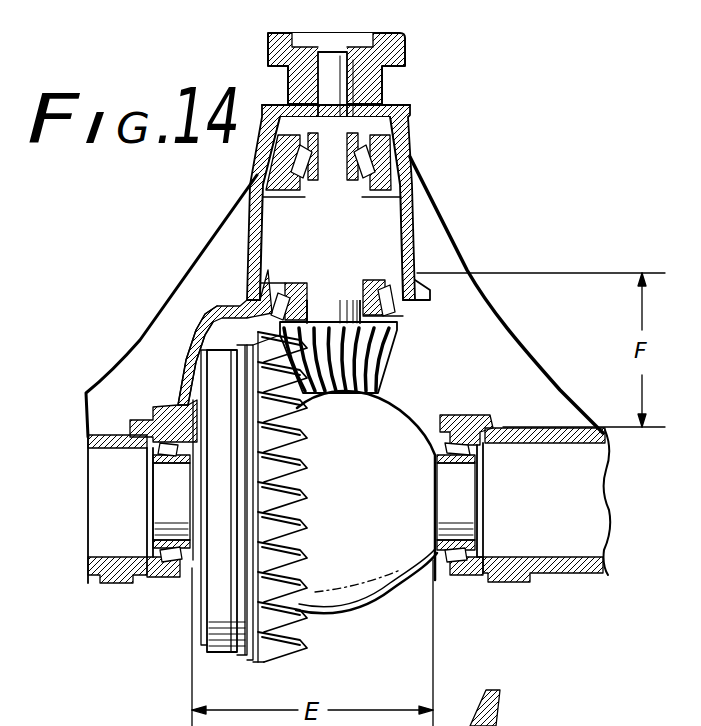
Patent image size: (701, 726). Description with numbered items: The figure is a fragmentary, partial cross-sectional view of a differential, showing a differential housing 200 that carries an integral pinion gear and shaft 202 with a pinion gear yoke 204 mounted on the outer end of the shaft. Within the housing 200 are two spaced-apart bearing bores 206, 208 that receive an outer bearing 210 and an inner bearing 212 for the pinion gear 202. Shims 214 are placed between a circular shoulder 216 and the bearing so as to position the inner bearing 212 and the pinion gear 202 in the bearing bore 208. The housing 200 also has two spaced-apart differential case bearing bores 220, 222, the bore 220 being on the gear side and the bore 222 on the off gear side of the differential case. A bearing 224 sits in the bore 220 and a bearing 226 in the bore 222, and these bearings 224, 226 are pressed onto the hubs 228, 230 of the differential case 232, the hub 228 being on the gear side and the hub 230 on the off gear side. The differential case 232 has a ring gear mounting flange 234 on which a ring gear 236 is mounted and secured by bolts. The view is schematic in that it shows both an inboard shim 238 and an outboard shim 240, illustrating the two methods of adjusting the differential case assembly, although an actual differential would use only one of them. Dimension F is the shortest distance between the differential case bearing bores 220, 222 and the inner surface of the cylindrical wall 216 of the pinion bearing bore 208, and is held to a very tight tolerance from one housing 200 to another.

The differential housing 200 is at (100, 590).
The pinion gear and shaft 202 is at (338, 222).
The pinion gear yoke 204 is at (403, 52).
The bearing bore 206 is at (413, 170).
The bearing bore 208 is at (487, 273).
The outer bearing 210 is at (405, 127).
The inner bearing 212 is at (363, 283).
The shims 214 is at (262, 270).
The circular shoulder 216 is at (417, 260).
The differential case bearing bore 220 is at (160, 412).
The differential case bearing bore 222 is at (470, 415).
The bearing 224 is at (160, 572).
The bearing 226 is at (465, 577).
The hub 228 is at (185, 507).
The hub 230 is at (457, 490).
The differential case 232 is at (367, 600).
The ring gear mounting flange 234 is at (227, 613).
The ring gear 236 is at (290, 653).
The inboard shim 238 is at (170, 380).
The outboard shim 240 is at (482, 557).